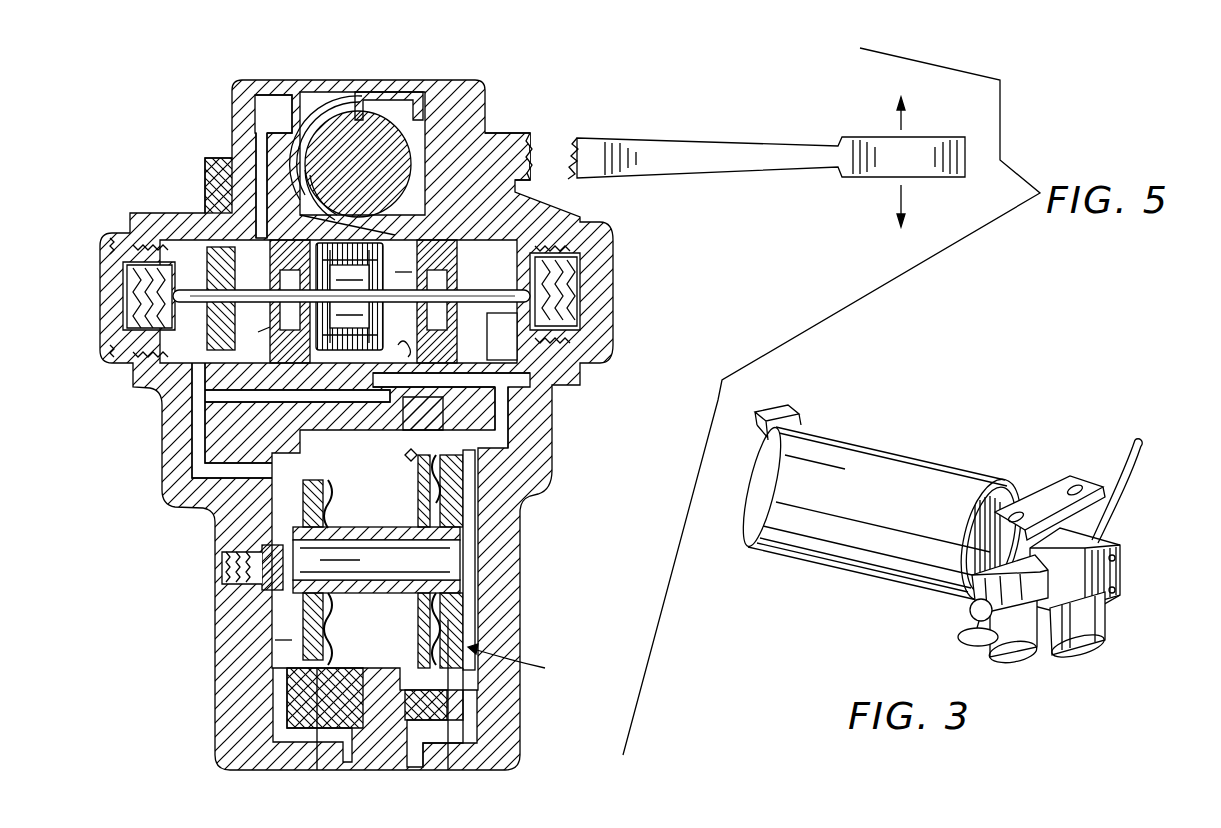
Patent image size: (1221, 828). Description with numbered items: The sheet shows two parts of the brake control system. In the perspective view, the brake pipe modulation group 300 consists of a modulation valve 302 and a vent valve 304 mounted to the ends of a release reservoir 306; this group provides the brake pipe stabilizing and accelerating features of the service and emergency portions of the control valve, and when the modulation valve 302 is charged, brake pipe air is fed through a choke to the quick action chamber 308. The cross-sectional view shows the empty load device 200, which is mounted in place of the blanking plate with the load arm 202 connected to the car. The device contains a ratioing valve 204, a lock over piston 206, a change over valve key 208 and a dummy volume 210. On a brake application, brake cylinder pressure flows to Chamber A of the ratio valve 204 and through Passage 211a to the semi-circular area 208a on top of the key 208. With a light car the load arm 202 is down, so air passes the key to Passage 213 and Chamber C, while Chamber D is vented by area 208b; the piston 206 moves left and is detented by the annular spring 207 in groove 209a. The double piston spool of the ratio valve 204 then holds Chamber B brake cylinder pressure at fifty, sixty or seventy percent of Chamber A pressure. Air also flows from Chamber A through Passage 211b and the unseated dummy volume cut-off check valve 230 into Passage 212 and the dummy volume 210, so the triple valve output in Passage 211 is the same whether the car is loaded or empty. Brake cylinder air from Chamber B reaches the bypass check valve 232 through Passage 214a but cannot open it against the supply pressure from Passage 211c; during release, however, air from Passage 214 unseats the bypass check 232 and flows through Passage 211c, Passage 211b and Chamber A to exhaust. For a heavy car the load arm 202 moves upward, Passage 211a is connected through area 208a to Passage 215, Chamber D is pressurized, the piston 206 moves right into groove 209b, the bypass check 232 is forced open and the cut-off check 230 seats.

In FIG. 5, the empty load device 200 is at (762, 298).
In FIG. 5, the load arm 202 is at (738, 152).
In FIG. 5, the ratioing valve 204 is at (440, 565).
In FIG. 5, the lock over piston 206 is at (350, 270).
In FIG. 5, the annular spring 207 is at (236, 405).
In FIG. 5, the change over valve key 208 is at (395, 145).
In FIG. 5, the semi-circular area 208a is at (345, 112).
In FIG. 5, the venting area 208b is at (362, 200).
In FIG. 5, the detent groove 209a is at (408, 345).
In FIG. 5, the detent groove 209b is at (413, 455).
In FIG. 5, the dummy volume 210 is at (272, 95).
In FIG. 5, the passage 211 is at (282, 718).
In FIG. 5, the passage 211a is at (397, 98).
In FIG. 5, the passage 211b is at (195, 462).
In FIG. 5, the passage 211c is at (583, 386).
In FIG. 5, the passage 212 is at (258, 140).
In FIG. 5, the passage 213 is at (388, 190).
In FIG. 5, the passage 214 is at (470, 708).
In FIG. 5, the passage 214a is at (505, 433).
In FIG. 5, the passage 215 is at (303, 200).
In FIG. 5, the dummy volume cut-off check valve 230 is at (188, 320).
In FIG. 5, the bypass check valve 232 is at (600, 250).
In FIG. 3, the brake pipe modulation group 300 is at (998, 440).
In FIG. 3, the E-1 modulation valve 302 is at (1105, 580).
In FIG. 3, the KM-2 vent valve 304 is at (1030, 653).
In FIG. 3, the release reservoir 306 is at (882, 582).
In FIG. 3, the quick action chamber 308 is at (1092, 628).